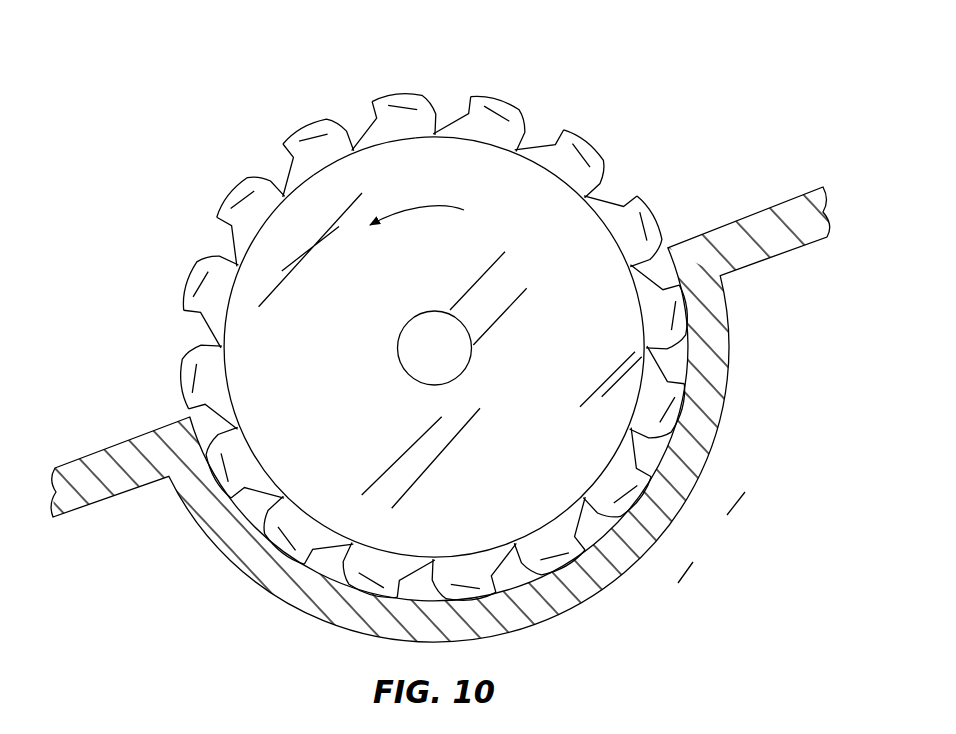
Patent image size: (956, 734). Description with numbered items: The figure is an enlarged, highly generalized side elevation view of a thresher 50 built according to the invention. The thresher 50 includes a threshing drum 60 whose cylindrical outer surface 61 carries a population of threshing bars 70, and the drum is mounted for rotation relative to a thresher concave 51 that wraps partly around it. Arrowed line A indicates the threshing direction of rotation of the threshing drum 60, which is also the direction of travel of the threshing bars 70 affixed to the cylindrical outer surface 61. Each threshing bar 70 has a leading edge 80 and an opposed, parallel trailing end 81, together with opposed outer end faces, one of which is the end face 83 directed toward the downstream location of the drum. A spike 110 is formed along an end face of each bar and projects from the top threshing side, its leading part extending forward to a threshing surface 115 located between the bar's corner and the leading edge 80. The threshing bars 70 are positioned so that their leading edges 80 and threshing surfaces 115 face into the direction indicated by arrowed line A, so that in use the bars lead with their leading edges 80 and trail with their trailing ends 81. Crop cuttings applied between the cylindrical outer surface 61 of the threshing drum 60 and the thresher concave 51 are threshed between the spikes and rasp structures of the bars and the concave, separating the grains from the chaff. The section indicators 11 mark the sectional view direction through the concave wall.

The thresher 50 is at (440, 358).
The thresher concave 51 is at (307, 597).
The threshing drum 60 is at (434, 347).
The cylindrical outer surface 61 is at (582, 142).
The threshing bar 70 is at (427, 311).
The leading edge 80 is at (285, 199).
The trailing end 81 is at (353, 145).
The end face 83 is at (320, 158).
The spike 110 is at (259, 116).
The threshing surface 115 is at (283, 150).
The section line 11 is at (710, 483).
The arrowed line A is at (418, 230).